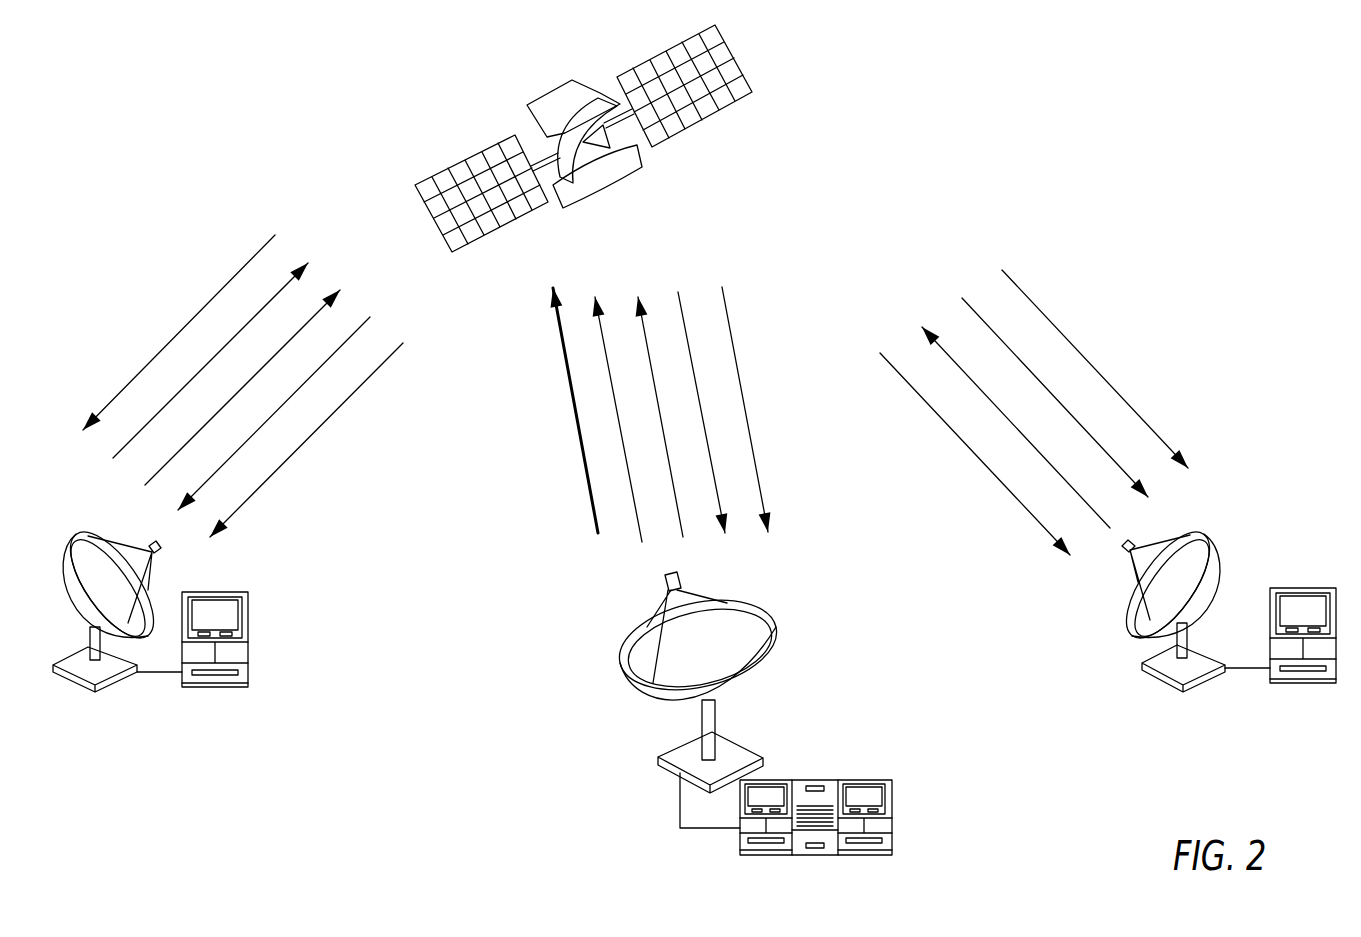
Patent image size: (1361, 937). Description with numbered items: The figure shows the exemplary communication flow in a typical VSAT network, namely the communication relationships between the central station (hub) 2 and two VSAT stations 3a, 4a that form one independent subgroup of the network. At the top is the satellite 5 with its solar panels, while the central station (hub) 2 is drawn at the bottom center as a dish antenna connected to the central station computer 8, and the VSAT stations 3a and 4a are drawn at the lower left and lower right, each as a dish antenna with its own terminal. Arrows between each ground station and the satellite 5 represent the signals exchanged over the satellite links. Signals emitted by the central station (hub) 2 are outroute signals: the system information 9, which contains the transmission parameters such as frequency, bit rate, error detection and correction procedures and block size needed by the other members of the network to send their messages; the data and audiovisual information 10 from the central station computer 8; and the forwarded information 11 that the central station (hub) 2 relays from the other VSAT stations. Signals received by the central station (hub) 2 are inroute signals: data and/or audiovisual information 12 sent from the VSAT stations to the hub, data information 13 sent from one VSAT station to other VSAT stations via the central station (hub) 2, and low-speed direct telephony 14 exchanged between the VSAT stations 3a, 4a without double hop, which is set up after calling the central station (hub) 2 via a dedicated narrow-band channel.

The satellite 5 is at (627, 168).
The VSAT station 3a is at (93, 688).
The central station (hub) 2 is at (658, 760).
The central station computer 8 is at (740, 842).
The VSAT station 4a is at (1308, 685).
The system information 9 is at (640, 421).
The data and audiovisual information 10 is at (644, 419).
The forwarded information 11 is at (886, 417).
The data and/or audiovisual information 12 is at (435, 411).
The data information 13 is at (440, 397).
The low-speed direct telephony 14 is at (635, 351).